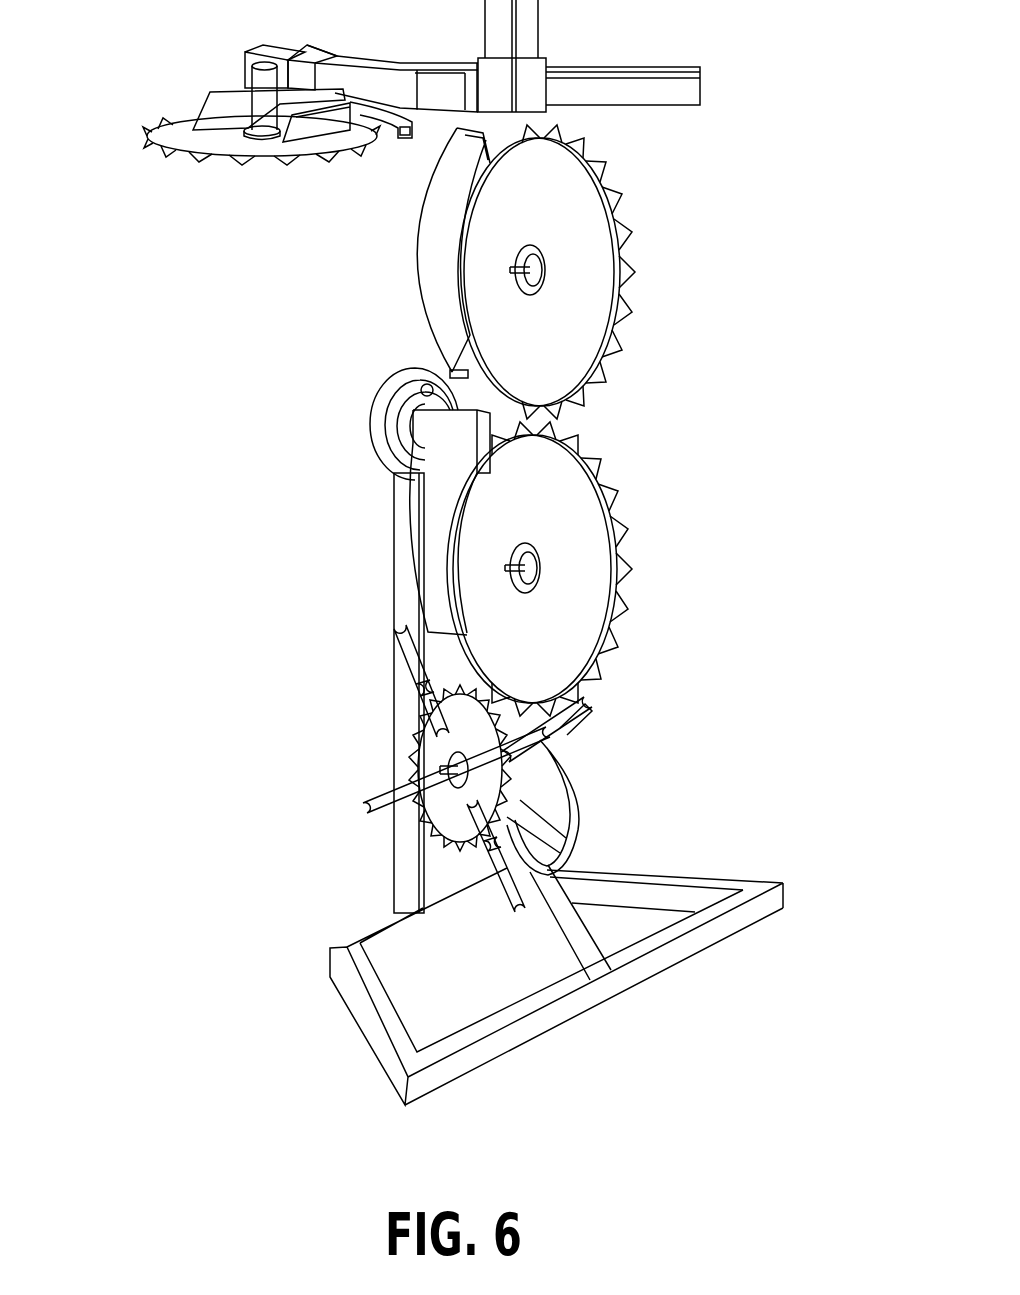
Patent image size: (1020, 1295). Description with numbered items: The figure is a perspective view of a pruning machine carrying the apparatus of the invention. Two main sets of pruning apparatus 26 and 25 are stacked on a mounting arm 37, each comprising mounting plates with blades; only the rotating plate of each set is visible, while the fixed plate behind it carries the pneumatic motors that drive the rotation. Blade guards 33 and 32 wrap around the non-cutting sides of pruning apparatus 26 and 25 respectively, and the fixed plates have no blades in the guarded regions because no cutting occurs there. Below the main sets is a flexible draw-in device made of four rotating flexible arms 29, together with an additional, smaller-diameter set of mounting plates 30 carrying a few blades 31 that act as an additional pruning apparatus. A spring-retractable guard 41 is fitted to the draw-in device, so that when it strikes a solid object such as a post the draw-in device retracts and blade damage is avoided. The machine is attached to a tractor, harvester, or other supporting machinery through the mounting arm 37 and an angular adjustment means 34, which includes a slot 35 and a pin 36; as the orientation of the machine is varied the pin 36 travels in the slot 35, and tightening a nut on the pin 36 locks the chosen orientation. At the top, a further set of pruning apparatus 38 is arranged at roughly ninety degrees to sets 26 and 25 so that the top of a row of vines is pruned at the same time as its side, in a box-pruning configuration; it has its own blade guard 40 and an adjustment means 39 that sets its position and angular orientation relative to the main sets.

The pruning apparatus 25 is at (598, 590).
The pruning apparatus 26 is at (575, 295).
The rotating flexible arm 29 is at (410, 660).
The mounting plate 30 is at (440, 768).
The blade 31 is at (525, 782).
The blade guard 32 is at (430, 520).
The blade guard 33 is at (425, 245).
The angular adjustment means 34 is at (393, 403).
The slot 35 is at (403, 447).
The pin 36 is at (420, 386).
The mounting arm 37 is at (398, 585).
The further set of pruning apparatus 38 is at (178, 137).
The adjustment means 39 is at (655, 88).
The blade guard 40 is at (405, 150).
The guard 41 is at (580, 830).